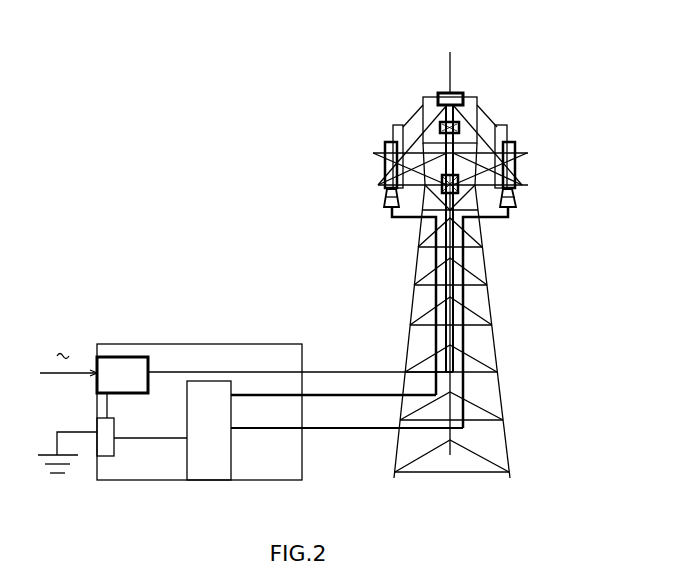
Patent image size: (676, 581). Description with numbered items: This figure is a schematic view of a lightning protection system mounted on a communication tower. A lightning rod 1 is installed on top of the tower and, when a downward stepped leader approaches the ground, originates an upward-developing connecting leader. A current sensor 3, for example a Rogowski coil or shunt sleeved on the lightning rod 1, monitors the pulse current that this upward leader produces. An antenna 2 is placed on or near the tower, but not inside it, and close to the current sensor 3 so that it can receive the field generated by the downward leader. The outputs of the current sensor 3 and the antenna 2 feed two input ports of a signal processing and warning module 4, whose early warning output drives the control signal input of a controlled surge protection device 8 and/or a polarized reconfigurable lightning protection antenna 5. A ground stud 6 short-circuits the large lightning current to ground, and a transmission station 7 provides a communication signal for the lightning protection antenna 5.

The lightning rod 1 is at (476, 56).
The antenna 2 is at (487, 62).
The current sensor 3 is at (500, 106).
The signal processing and warning module (SPWM) 4 is at (526, 127).
The polarized reconfigurable lightning protection antenna (LPA) 5 is at (515, 207).
The ground stud 6 is at (164, 361).
The transmission station 7 is at (232, 373).
The controlled surge protection device (CSPD) 8 is at (140, 330).